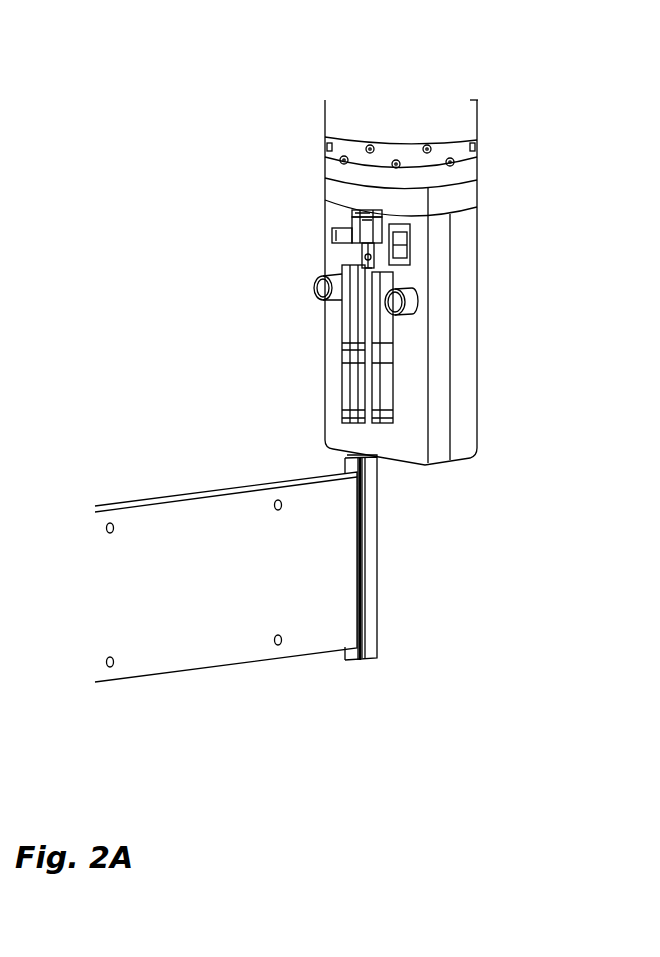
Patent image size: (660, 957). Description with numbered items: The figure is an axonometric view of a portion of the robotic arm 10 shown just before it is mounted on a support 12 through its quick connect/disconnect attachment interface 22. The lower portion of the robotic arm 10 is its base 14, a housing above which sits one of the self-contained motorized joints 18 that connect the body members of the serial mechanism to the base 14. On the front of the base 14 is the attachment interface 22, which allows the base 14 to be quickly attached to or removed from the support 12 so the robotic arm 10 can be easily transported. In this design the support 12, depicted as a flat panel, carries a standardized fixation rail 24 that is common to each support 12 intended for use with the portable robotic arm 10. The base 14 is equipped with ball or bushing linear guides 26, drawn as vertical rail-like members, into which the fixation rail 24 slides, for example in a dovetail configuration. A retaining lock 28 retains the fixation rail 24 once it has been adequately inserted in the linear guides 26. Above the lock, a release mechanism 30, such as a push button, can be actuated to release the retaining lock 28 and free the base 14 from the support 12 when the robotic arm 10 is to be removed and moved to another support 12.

The robotic arm 10 is at (473, 100).
The support 12 is at (320, 628).
The base 14 is at (505, 230).
The self-contained motorized joints 18 is at (473, 142).
The attachment interface 22 is at (387, 322).
The fixation rail 24 is at (368, 517).
The linear guides 26 is at (372, 383).
The retaining lock 28 is at (367, 258).
The release mechanism 30 is at (347, 222).